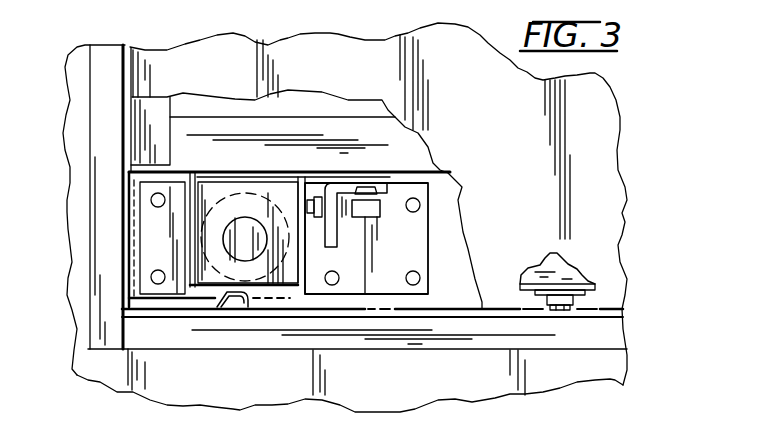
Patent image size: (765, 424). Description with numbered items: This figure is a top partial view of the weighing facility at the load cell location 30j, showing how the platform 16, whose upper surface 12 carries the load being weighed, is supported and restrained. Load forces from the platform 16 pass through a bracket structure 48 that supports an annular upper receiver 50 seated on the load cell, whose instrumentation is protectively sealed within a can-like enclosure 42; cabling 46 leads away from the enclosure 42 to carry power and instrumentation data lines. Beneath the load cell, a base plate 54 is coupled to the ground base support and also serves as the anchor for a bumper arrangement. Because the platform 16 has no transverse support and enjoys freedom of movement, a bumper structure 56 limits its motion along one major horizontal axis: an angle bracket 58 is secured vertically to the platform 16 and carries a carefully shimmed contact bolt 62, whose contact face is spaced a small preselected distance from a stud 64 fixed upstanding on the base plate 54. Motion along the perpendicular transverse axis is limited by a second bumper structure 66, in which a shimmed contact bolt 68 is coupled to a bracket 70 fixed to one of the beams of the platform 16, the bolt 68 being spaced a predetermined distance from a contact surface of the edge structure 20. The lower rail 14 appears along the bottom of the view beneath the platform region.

The surface 12 is at (519, 152).
The lower rail 14 is at (422, 390).
The platform 16 is at (403, 143).
The edge structure 20 is at (108, 274).
The load cell position 30j is at (239, 167).
The can-like enclosure 42 is at (282, 268).
The cabling 46 is at (220, 294).
The bracket structure 48 is at (186, 232).
The annular upper receiver 50 is at (242, 232).
The base plate 54 is at (427, 273).
The bumper structure 56 is at (434, 225).
The angle bracket 58 is at (340, 180).
The contact bolt 62 is at (342, 218).
The stud 64 is at (368, 212).
The bumper structure 66 is at (580, 260).
The contact bolt 68 is at (563, 314).
The bracket 70 is at (588, 292).